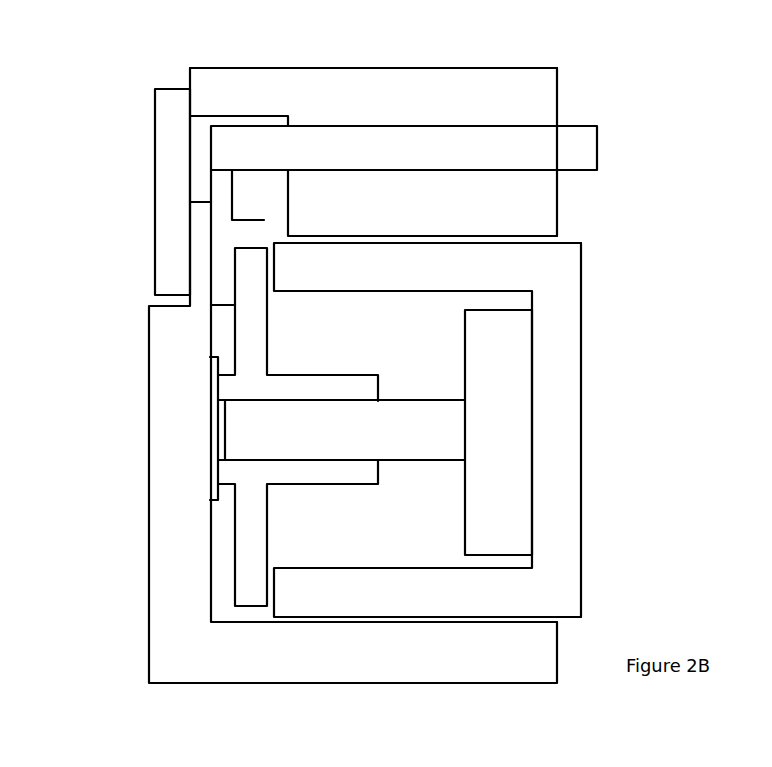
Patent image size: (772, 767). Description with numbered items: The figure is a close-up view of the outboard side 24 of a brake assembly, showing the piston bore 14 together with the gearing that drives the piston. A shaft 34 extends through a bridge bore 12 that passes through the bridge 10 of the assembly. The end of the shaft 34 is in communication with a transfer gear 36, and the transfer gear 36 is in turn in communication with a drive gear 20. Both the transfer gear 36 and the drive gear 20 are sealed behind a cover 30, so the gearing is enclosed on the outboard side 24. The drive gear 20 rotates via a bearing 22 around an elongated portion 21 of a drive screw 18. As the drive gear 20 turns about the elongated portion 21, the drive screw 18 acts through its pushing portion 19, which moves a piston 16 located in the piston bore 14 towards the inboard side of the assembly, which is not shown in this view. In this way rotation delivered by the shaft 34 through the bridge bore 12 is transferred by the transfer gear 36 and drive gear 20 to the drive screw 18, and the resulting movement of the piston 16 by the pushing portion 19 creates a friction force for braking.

The bridge 10 is at (414, 356).
The bridge bore 12 is at (373, 318).
The piston bore 14 is at (515, 429).
The piston 16 is at (620, 430).
The drive screw 18 is at (377, 454).
The pushing portion 19 is at (568, 432).
The drive gear 20 is at (193, 542).
The elongated portion 21 is at (441, 488).
The bearing 22 is at (123, 428).
The outboard side 24 is at (296, 123).
The cover 30 is at (109, 195).
The shaft 34 is at (479, 140).
The transfer gear 36 is at (228, 240).